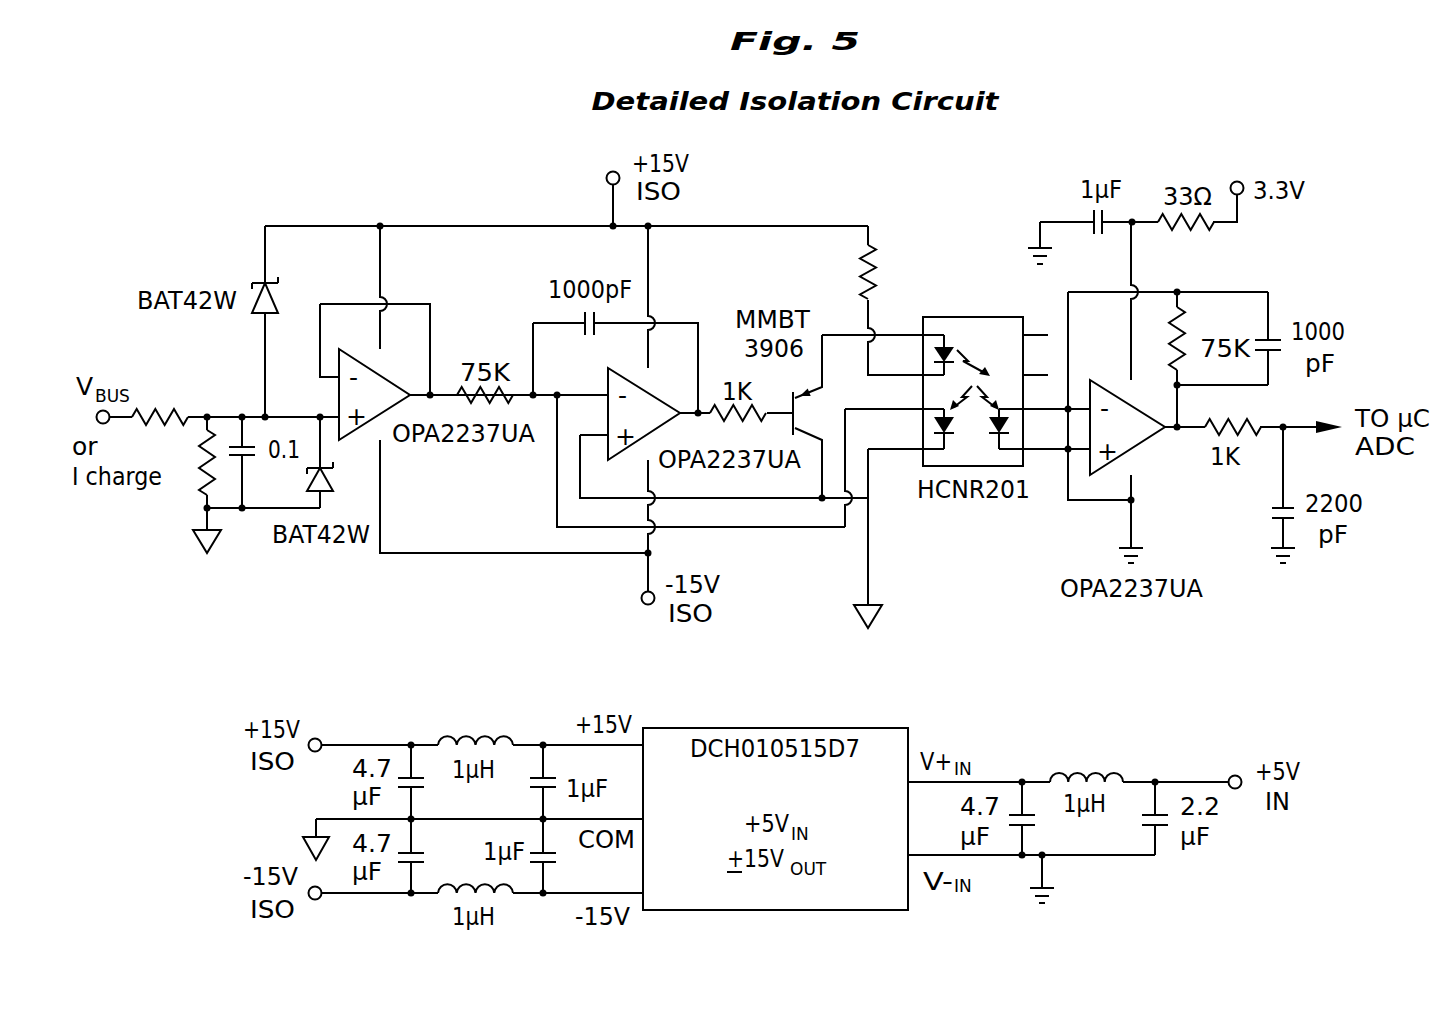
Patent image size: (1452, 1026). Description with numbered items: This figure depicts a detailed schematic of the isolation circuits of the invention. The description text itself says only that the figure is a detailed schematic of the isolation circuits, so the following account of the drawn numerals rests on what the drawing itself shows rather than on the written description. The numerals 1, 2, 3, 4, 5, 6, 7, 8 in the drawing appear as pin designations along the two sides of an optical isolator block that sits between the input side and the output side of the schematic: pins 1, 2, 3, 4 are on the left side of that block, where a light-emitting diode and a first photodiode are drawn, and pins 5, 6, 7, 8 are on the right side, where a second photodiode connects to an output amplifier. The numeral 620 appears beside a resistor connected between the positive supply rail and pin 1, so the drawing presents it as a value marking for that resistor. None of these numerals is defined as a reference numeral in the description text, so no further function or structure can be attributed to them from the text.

The HCNR201 pin 1 (LED anode) 1 is at (883, 323).
The HCNR201 pin 2 (LED cathode) 2 is at (906, 361).
The HCNR201 pin 3 (photodiode 1 anode) 3 is at (894, 425).
The HCNR201 pin 4 (photodiode 1 cathode) 4 is at (906, 463).
The HCNR201 pin 5 (photodiode 2 cathode) 5 is at (1044, 463).
The HCNR201 pin 6 (photodiode 2 anode) 6 is at (1044, 425).
The HCNR201 pin 7 (no connection) 7 is at (1038, 361).
The HCNR201 pin 8 (no connection) 8 is at (1038, 323).
The 620 ohm LED current-limiting resistor 620 is at (902, 300).